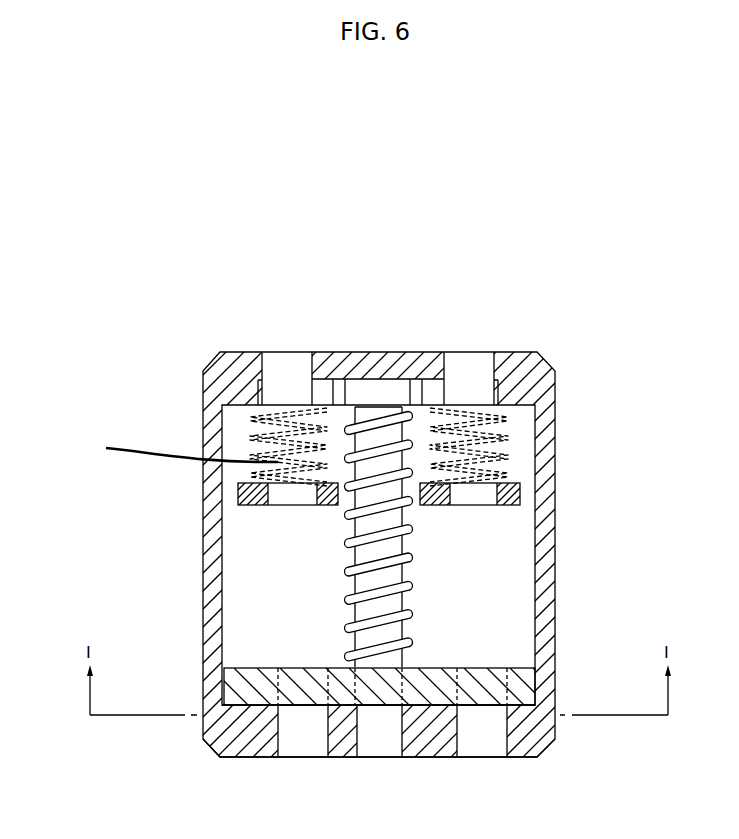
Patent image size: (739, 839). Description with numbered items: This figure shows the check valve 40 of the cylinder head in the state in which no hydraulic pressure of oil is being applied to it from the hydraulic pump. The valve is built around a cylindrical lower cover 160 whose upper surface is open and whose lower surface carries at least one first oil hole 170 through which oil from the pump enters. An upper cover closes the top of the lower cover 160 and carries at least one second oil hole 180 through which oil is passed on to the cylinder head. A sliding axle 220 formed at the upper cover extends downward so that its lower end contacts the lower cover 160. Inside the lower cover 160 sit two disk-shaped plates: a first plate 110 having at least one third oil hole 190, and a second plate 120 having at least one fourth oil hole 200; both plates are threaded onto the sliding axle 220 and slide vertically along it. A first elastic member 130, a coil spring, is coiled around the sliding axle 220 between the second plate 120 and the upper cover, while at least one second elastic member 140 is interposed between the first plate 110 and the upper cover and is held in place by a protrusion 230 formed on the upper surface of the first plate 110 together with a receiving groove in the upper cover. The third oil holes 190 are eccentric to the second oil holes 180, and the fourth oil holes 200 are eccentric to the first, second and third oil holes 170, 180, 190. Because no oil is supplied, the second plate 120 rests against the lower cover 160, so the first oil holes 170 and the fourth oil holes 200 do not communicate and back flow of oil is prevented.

The check valve 40 is at (524, 323).
The first plate 110 is at (518, 492).
The second plate 120 is at (530, 686).
The first elastic member 130 is at (404, 407).
The second elastic member 140 is at (250, 427).
The lower cover 160 is at (553, 733).
The first oil hole 170 is at (484, 748).
The second oil hole 180 is at (286, 357).
The third oil hole 190 is at (275, 492).
The fourth oil hole 200 is at (308, 677).
The sliding axle 220 is at (397, 458).
The protrusion 230 is at (166, 449).